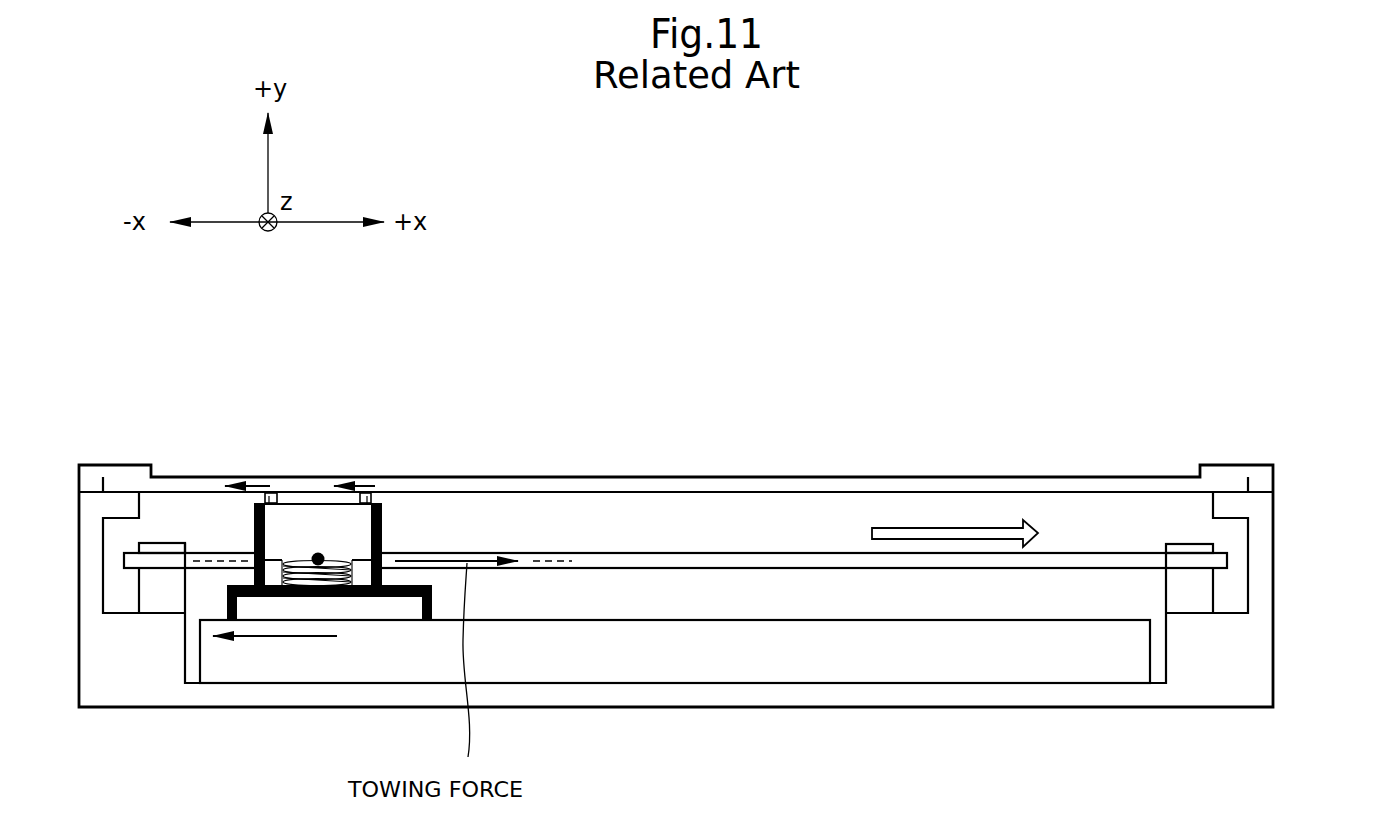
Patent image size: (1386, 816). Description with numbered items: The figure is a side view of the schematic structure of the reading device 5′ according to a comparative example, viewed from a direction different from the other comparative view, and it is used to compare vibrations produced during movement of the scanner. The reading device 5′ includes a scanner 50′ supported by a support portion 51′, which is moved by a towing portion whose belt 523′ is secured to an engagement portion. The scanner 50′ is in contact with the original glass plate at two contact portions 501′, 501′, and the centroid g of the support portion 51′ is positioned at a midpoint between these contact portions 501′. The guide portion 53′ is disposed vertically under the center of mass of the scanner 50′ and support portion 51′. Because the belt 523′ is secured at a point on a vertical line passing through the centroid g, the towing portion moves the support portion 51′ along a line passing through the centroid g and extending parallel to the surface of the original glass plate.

The reading device 5′ is at (1290, 457).
The contact portions 501′ is at (273, 493).
The centroid g is at (316, 552).
The support portion 51′ is at (388, 508).
The scanner 50′ is at (408, 493).
The guide portion 53′ is at (266, 646).
The belt 523′ is at (832, 573).